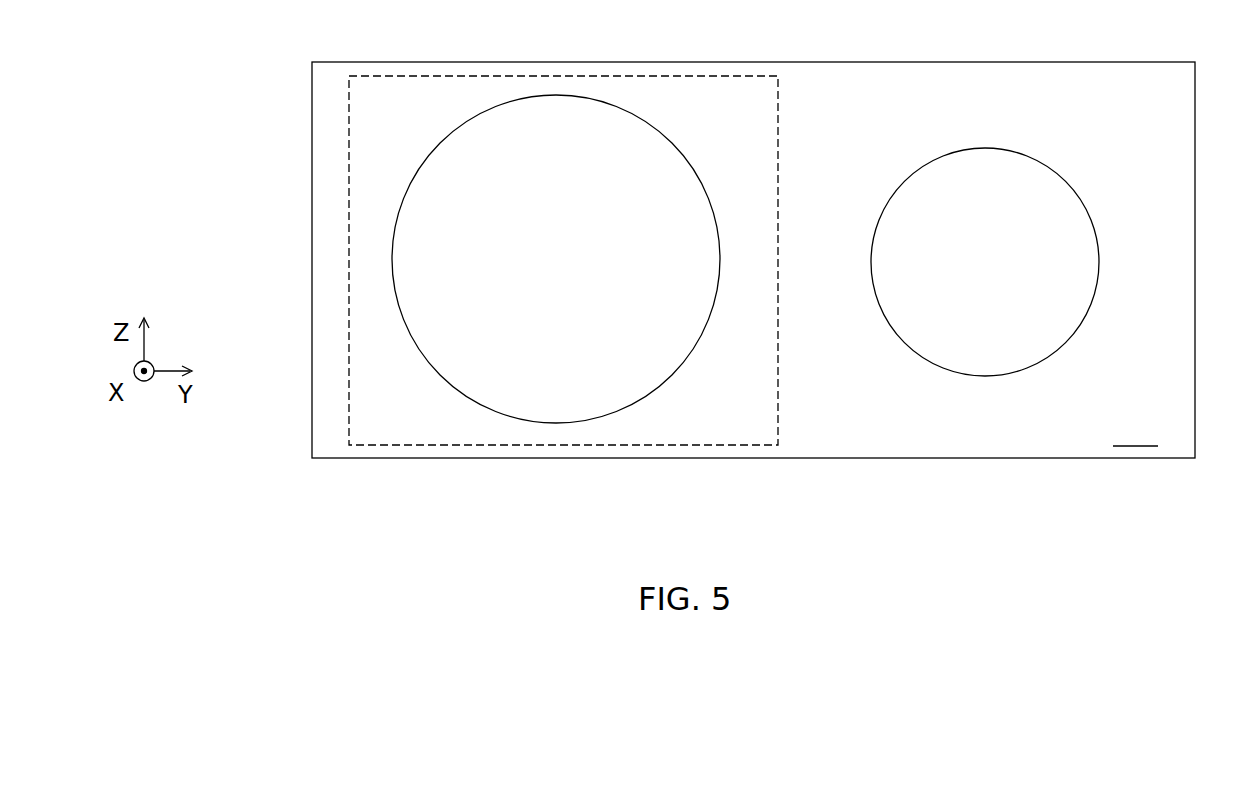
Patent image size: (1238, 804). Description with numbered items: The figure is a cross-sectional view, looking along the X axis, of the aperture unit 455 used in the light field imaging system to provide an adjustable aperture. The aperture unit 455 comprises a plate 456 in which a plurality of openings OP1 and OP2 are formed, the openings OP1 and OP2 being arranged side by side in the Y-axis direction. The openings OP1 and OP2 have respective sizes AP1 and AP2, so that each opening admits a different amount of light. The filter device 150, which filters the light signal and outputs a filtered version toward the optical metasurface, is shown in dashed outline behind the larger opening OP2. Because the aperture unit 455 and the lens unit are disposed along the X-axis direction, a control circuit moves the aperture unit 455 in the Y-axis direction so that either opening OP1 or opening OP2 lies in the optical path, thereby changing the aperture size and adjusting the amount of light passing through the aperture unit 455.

The filter device 150 is at (604, 76).
The aperture unit 455 is at (1090, 62).
The plate 456 is at (1139, 432).
The opening OP1 is at (1067, 180).
The opening OP2 is at (685, 157).
The size AP1 is at (985, 262).
The size AP2 is at (556, 259).